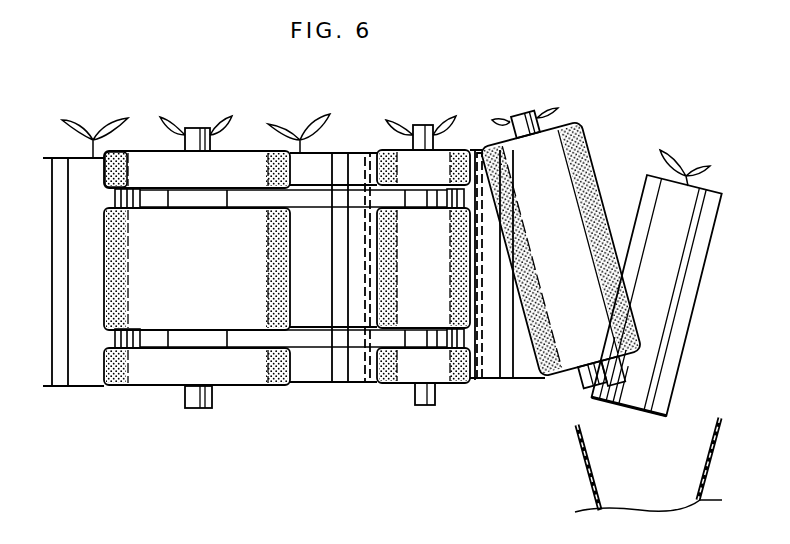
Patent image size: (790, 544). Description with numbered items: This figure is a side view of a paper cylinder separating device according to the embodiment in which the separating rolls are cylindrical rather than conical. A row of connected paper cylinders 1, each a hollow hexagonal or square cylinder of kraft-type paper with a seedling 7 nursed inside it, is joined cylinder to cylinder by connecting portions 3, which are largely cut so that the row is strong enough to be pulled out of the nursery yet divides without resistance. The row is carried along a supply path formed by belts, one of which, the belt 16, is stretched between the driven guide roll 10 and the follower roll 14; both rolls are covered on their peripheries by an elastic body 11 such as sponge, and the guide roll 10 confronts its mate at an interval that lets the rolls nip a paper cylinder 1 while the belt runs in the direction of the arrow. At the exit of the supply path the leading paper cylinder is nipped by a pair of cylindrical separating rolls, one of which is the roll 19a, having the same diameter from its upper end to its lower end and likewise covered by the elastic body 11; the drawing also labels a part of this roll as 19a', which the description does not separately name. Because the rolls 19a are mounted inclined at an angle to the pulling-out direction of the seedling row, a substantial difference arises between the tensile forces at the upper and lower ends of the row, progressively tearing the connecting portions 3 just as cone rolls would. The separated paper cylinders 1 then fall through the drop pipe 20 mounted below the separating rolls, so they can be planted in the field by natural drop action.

The paper cylinder 1 is at (92, 372).
The connecting portion 3 is at (358, 158).
The seedlings 7 is at (310, 125).
The guide roll 10 is at (147, 162).
The elastic body 11 is at (115, 152).
The follower roll 14 is at (443, 152).
The belt 16 is at (306, 198).
The cylindrical separating roll 19a is at (564, 242).
The projection of tilting holder 19a' is at (524, 106).
The drop pipe 20 is at (583, 457).